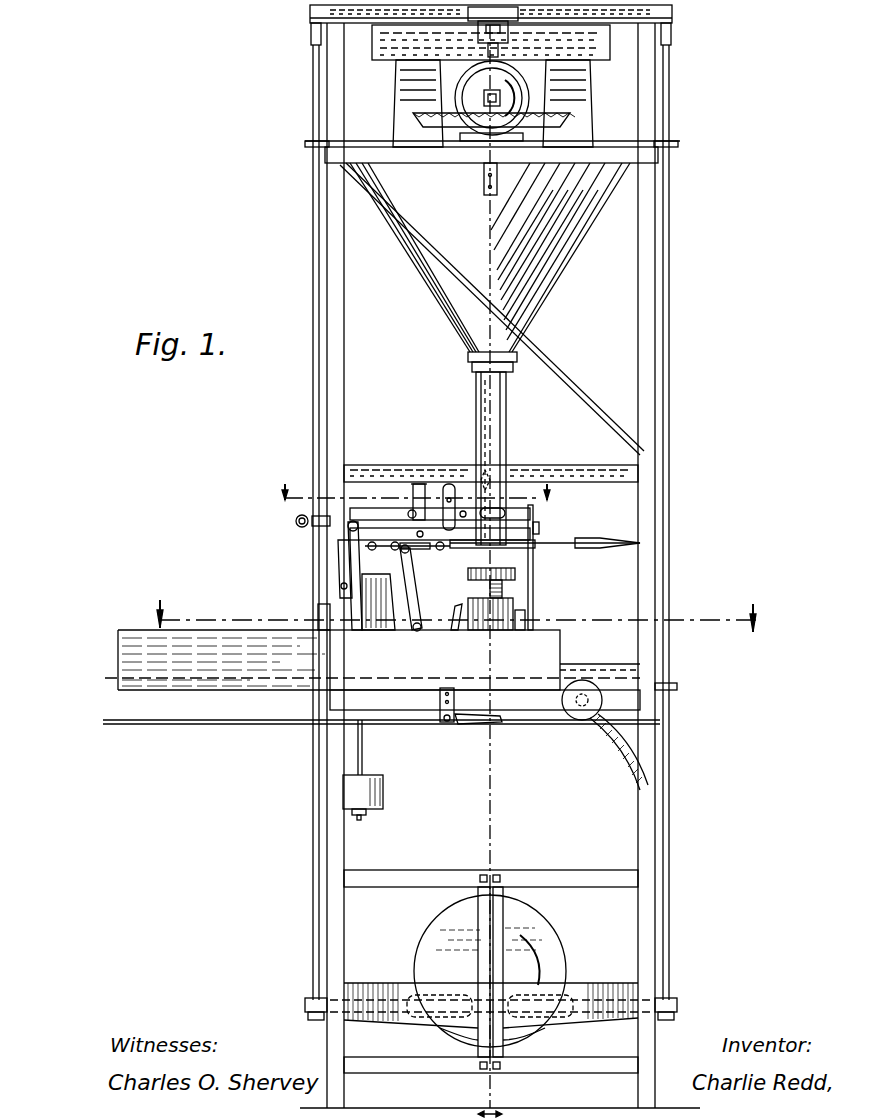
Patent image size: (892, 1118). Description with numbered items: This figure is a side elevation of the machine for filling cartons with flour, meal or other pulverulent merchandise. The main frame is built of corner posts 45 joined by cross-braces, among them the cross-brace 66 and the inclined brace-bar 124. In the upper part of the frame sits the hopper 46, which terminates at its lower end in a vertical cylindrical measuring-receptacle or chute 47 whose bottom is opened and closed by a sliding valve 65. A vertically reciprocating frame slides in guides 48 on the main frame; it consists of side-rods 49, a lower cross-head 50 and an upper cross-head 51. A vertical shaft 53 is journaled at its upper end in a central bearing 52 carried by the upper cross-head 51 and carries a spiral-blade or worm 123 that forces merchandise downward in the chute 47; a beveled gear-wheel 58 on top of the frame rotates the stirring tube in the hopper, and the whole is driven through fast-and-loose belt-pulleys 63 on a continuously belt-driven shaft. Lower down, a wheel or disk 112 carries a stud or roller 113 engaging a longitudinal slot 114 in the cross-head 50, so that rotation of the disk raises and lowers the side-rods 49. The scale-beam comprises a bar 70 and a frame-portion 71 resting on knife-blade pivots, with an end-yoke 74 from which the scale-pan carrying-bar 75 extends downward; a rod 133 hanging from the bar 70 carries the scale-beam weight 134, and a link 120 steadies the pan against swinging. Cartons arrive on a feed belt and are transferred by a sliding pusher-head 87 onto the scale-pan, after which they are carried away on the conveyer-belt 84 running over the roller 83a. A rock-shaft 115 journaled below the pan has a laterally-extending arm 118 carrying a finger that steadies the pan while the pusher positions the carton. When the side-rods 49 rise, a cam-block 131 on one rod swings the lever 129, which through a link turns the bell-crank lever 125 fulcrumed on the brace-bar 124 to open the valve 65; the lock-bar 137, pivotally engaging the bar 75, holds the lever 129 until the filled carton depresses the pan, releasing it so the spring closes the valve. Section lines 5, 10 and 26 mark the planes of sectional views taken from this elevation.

The section line 5 is at (491, 574).
The section line 10 is at (456, 616).
The section line 26 is at (413, 497).
The corner posts 45 is at (345, 368).
The hopper 46 is at (562, 270).
The cylindrical measuring-receptacle or chute 47 is at (507, 431).
The guides 48 is at (305, 142).
The side-rods 49 is at (312, 192).
The lower cross-head 50 is at (595, 1020).
The upper cross-head 51 is at (352, 24).
The central bearing 52 is at (478, 30).
The vertical shaft 53 is at (500, 50).
The beveled gear-wheel 58 is at (425, 119).
The fast-and-loose belt-pulleys 63 is at (530, 92).
The sliding valve 65 is at (434, 548).
The cross-brace 66 is at (583, 470).
The bar of scale-beam 70 is at (380, 510).
The frame-portion of scale-beam 71 is at (430, 508).
The end-yoke 74 is at (520, 508).
The scale-pan carrying-bar 75 is at (533, 581).
The roller 83a is at (572, 712).
The endless traveling conveyer-belt 84 is at (580, 720).
The sliding pusher-head 87 is at (468, 600).
The wheel or disk 112 is at (555, 938).
The stud or roller 113 is at (448, 1032).
The longitudinal groove or slot 114 is at (582, 982).
The rock-shaft 115 is at (447, 722).
The laterally-extending arm 118 is at (472, 725).
The link 120 is at (590, 668).
The spiral-blade or worm 123 is at (482, 428).
The inclined brace-bar 124 is at (392, 609).
The valve-opening and closing bell-crank lever 125 is at (384, 589).
The lever 129 is at (338, 598).
The cam-block 131 is at (318, 616).
The rod 133 is at (358, 570).
The scale-beam weight 134 is at (384, 786).
The lock-bar 137 is at (405, 530).